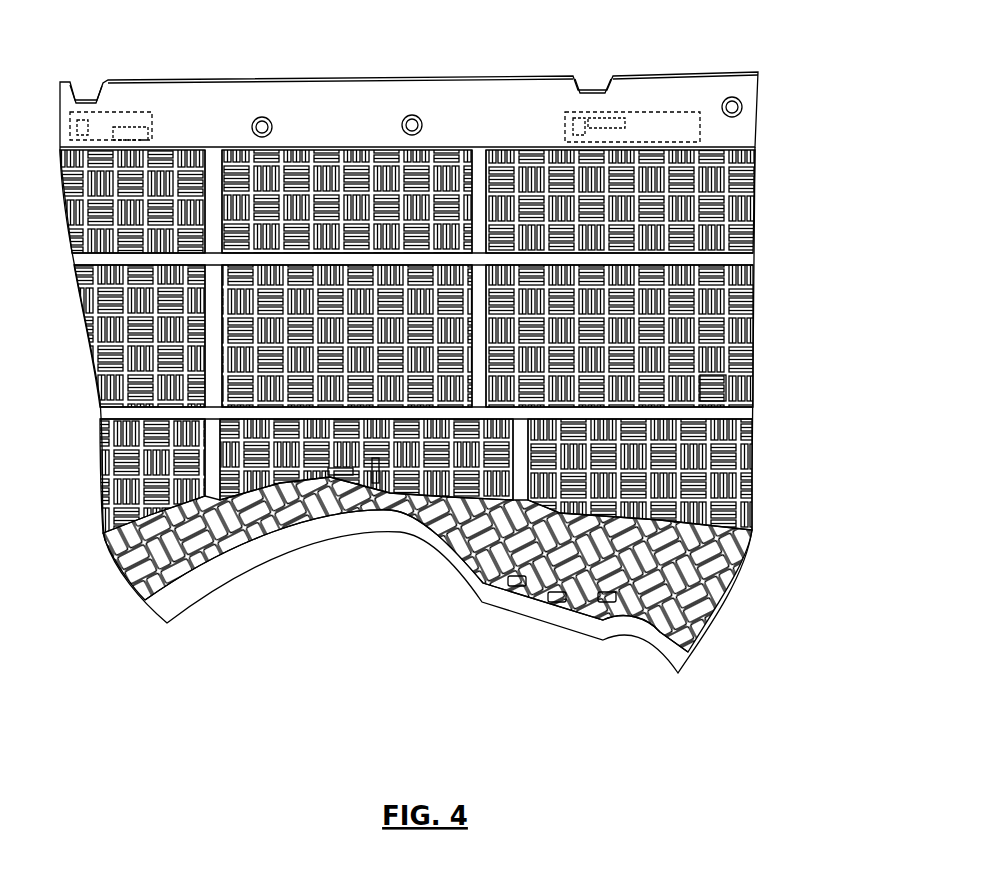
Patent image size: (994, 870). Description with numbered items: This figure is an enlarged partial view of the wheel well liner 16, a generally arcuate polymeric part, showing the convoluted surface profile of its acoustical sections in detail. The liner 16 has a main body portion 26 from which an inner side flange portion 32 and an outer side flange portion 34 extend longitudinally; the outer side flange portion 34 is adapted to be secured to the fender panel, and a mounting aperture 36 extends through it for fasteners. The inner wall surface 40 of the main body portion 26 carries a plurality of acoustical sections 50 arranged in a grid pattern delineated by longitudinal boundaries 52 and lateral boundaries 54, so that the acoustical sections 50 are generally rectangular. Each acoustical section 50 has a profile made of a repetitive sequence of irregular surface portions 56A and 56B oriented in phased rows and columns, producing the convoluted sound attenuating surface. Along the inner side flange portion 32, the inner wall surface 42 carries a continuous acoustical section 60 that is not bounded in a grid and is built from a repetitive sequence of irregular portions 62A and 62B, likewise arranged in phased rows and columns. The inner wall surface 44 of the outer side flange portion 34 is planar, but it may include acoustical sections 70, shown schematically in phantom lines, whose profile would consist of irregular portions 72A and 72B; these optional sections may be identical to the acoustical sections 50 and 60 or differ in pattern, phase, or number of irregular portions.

The liner 16 is at (775, 185).
The main body portion 26 is at (740, 316).
The inner side flange portion 32 is at (465, 552).
The outer side flange portion 34 is at (670, 72).
The mounting apertures 36 is at (735, 97).
The inner wall surface 40 is at (725, 383).
The inner wall surface 42 is at (458, 587).
The inner wall surface 44 is at (480, 96).
The acoustical sections 50 is at (436, 306).
The longitudinal boundaries 52 is at (735, 258).
The lateral boundaries 54 is at (212, 170).
The irregular surface portions 56A is at (383, 475).
The irregular surface portions 56B is at (340, 475).
The acoustical section 60 is at (605, 600).
The irregular portions 62A is at (518, 585).
The irregular portions 62B is at (557, 600).
The acoustical sections 70 is at (106, 125).
The irregular portions 72A is at (86, 122).
The irregular portions 72B is at (130, 128).